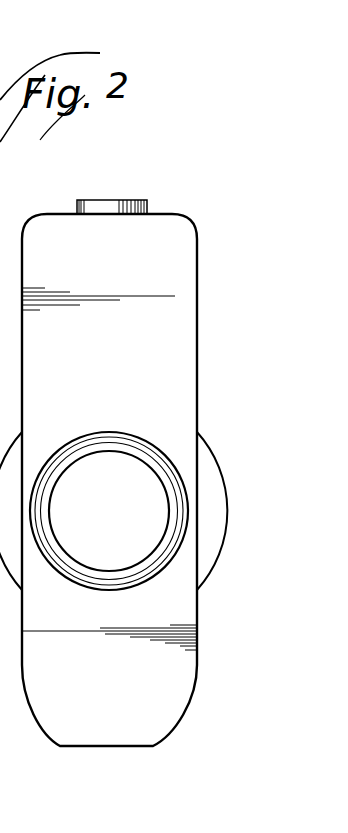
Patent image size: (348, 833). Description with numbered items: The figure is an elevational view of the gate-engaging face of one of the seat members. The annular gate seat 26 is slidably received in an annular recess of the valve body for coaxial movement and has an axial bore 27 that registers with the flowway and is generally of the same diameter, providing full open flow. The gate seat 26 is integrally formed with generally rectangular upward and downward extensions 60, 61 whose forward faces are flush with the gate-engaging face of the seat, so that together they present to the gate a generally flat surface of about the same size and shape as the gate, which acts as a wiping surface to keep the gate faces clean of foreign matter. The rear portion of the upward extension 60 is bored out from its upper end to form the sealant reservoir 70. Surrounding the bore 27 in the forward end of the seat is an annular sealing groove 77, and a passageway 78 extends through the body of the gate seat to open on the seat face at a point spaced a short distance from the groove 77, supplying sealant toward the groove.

The gate seat 26 is at (229, 500).
The axial bore 27 is at (62, 547).
The upward extension 60 is at (183, 324).
The downward extension 61 is at (178, 678).
The sealant reservoir 70 is at (148, 207).
The annular groove 77 is at (181, 485).
The passageway 78 is at (113, 426).